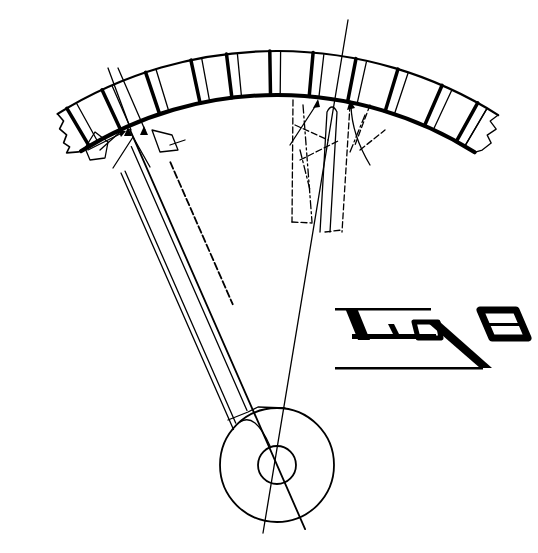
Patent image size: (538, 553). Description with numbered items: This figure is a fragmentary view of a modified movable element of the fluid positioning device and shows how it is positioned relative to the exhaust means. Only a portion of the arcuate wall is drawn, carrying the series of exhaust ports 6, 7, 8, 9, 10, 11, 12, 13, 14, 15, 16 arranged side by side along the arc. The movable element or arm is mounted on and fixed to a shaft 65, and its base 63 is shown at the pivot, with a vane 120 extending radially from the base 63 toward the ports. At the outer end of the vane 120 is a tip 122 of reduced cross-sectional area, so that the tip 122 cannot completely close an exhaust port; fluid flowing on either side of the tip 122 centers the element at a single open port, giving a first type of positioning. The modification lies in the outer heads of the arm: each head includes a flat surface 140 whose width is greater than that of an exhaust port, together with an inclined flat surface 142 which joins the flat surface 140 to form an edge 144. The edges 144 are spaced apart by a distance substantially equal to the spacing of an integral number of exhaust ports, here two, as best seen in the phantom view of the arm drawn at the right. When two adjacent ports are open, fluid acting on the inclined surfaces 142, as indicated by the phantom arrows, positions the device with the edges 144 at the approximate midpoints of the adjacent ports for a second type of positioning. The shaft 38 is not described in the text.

The exhaust port 6 is at (90, 126).
The exhaust port 7 is at (126, 110).
The exhaust port 8 is at (166, 97).
The exhaust port 9 is at (206, 91).
The exhaust port 10 is at (244, 86).
The exhaust port 11 is at (286, 86).
The exhaust port 12 is at (343, 53).
The exhaust port 13 is at (364, 100).
The exhaust port 14 is at (401, 111).
The exhaust port 15 is at (439, 130).
The exhaust port 16 is at (476, 134).
The pivot shaft 38 is at (297, 458).
The base 63 is at (233, 494).
The shaft 65 is at (270, 467).
The vane 120 is at (170, 205).
The tip 122 is at (122, 82).
The flat surface 140 is at (92, 118).
The inclined flat surface 142 is at (118, 160).
The edges 144 is at (82, 150).